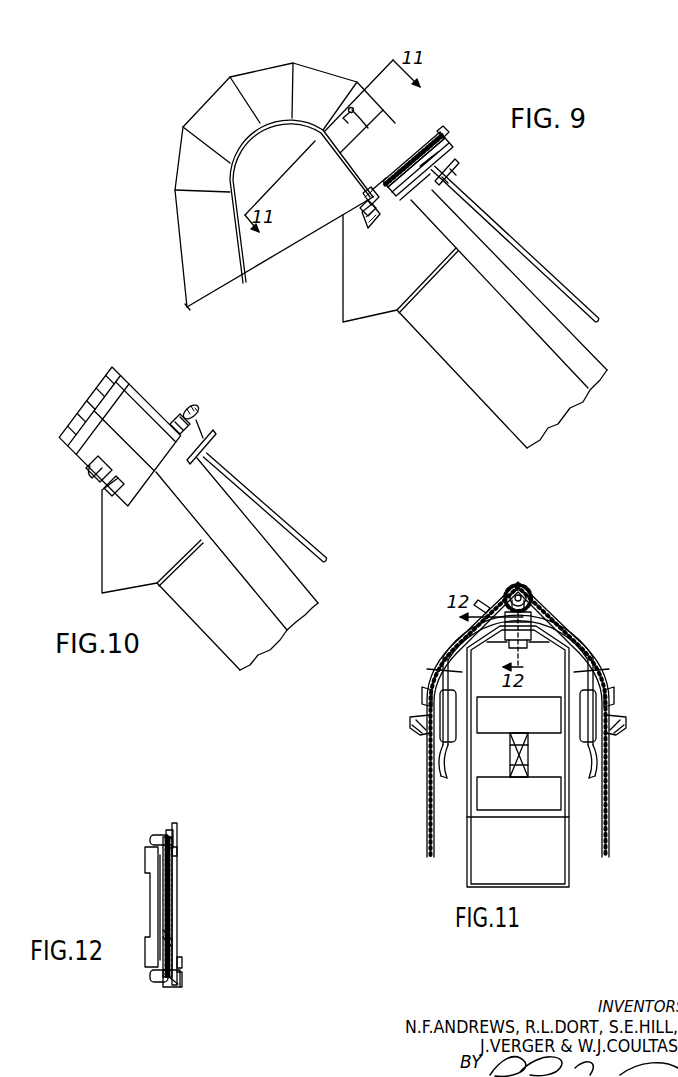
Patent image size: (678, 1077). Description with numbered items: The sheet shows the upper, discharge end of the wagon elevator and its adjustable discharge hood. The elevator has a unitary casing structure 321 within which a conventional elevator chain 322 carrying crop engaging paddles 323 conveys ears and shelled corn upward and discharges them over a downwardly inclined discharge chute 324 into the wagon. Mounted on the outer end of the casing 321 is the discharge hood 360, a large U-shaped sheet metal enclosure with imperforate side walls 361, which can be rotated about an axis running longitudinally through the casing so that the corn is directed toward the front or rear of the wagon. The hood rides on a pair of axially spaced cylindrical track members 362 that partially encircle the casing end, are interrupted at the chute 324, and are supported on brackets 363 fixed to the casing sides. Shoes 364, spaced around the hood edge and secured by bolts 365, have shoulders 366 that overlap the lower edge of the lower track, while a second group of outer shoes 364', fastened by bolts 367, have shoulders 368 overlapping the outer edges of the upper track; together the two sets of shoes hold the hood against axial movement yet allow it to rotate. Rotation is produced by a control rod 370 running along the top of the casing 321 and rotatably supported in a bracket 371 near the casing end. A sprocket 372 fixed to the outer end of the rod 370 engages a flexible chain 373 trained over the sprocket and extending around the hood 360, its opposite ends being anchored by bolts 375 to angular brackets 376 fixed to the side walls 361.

In FIG. 9, the casing structure 321 is at (493, 388).
In FIG. 10, the casing structure 321 is at (298, 596).
In FIG. 11, the elevator chain 322 is at (508, 737).
In FIG. 11, the crop engaging paddles 323 is at (537, 792).
In FIG. 9, the discharge chute 324 is at (365, 307).
In FIG. 10, the discharge chute 324 is at (114, 545).
In FIG. 11, the discharge chute 324 is at (547, 840).
In FIG. 9, the discharge hood 360 is at (278, 74).
In FIG. 11, the discharge hood 360 is at (612, 763).
In FIG. 12, the discharge hood 360 is at (178, 828).
In FIG. 9, the side walls 361 is at (313, 236).
In FIG. 11, the side walls 361 is at (427, 811).
In FIG. 10, the cylindrical track members 362 is at (177, 422).
In FIG. 11, the cylindrical track members 362 is at (440, 750).
In FIG. 12, the cylindrical track members 362 is at (170, 943).
In FIG. 10, the brackets 363 is at (110, 433).
In FIG. 11, the brackets 363 is at (452, 771).
In FIG. 12, the brackets 363 is at (163, 907).
In FIG. 11, the shoes 364 is at (518, 756).
In FIG. 12, the shoes 364 is at (185, 997).
In FIG. 11, the outer shoes 364' is at (538, 680).
In FIG. 12, the outer shoes 364' is at (156, 818).
In FIG. 9, the bolts 365 is at (412, 203).
In FIG. 12, the bolts 365 is at (153, 978).
In FIG. 12, the shoulders 366 is at (182, 959).
In FIG. 9, the bolts 367 is at (361, 130).
In FIG. 11, the bolts 367 is at (588, 673).
In FIG. 12, the bolts 367 is at (152, 840).
In FIG. 12, the shoulders 368 is at (177, 852).
In FIG. 9, the control rod 370 is at (510, 224).
In FIG. 10, the control rod 370 is at (319, 552).
In FIG. 11, the control rod 370 is at (517, 580).
In FIG. 9, the bracket 371 is at (457, 163).
In FIG. 9, the sprocket 372 is at (440, 131).
In FIG. 11, the sprocket 372 is at (540, 598).
In FIG. 9, the flexible chain 373 is at (407, 150).
In FIG. 11, the flexible chain 373 is at (483, 603).
In FIG. 9, the bolts 375 is at (372, 192).
In FIG. 11, the bolts 375 is at (420, 707).
In FIG. 9, the angular brackets 376 is at (362, 204).
In FIG. 11, the angular brackets 376 is at (410, 722).